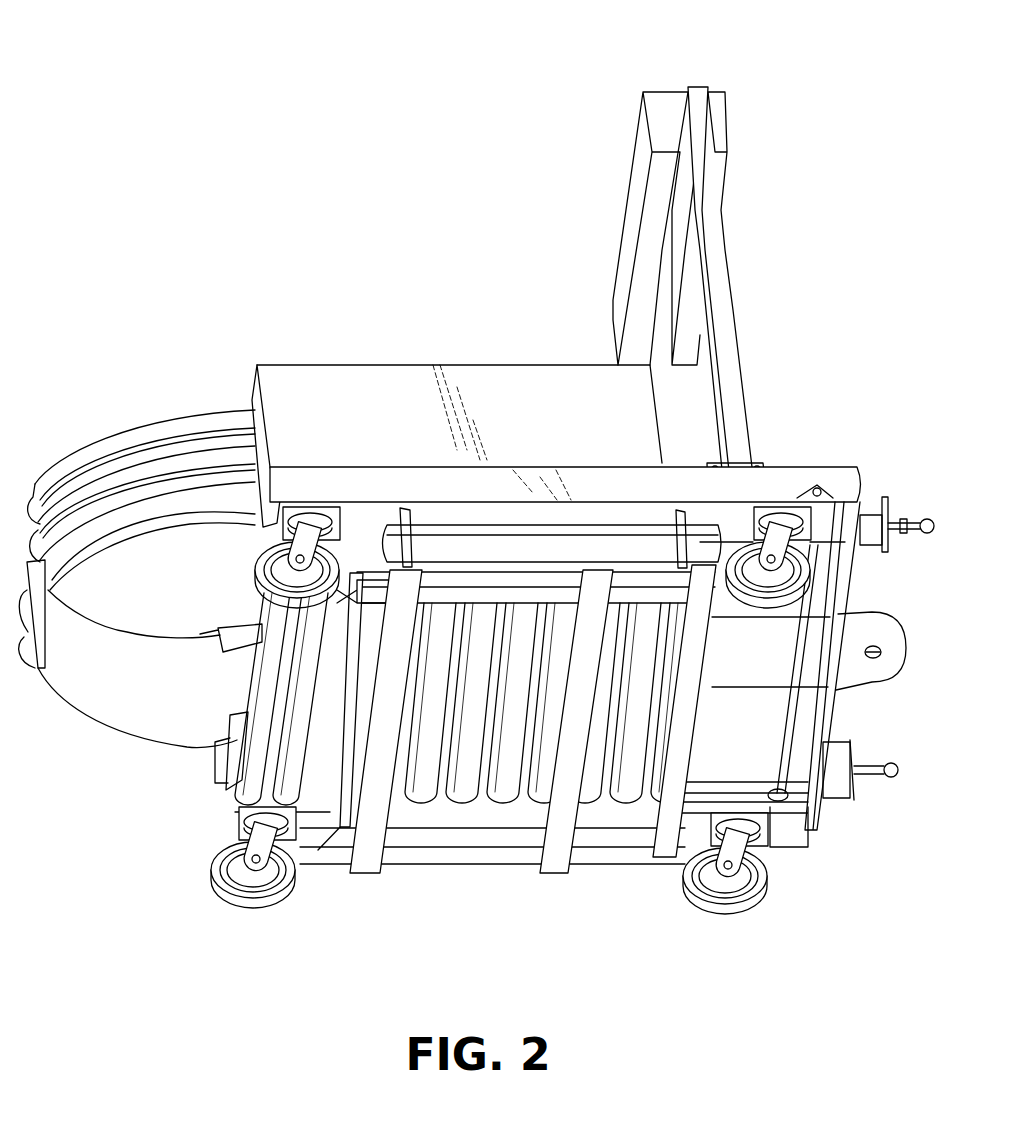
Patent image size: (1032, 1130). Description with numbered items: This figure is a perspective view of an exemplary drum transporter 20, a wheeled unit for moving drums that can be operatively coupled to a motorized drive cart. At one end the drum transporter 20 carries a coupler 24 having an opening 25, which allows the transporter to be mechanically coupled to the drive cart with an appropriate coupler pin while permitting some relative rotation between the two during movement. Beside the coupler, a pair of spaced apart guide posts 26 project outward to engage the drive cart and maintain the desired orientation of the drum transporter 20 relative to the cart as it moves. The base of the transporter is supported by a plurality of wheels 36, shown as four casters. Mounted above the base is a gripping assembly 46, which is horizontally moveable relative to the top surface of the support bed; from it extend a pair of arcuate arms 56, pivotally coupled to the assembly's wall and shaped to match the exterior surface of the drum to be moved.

The drum transporter 20 is at (517, 93).
The gripping assembly 46 is at (432, 322).
The arms 56 is at (128, 435).
The guide posts 26 is at (903, 508).
The coupler 24 is at (860, 630).
The opening 25 is at (873, 660).
The wheels 36 is at (727, 900).